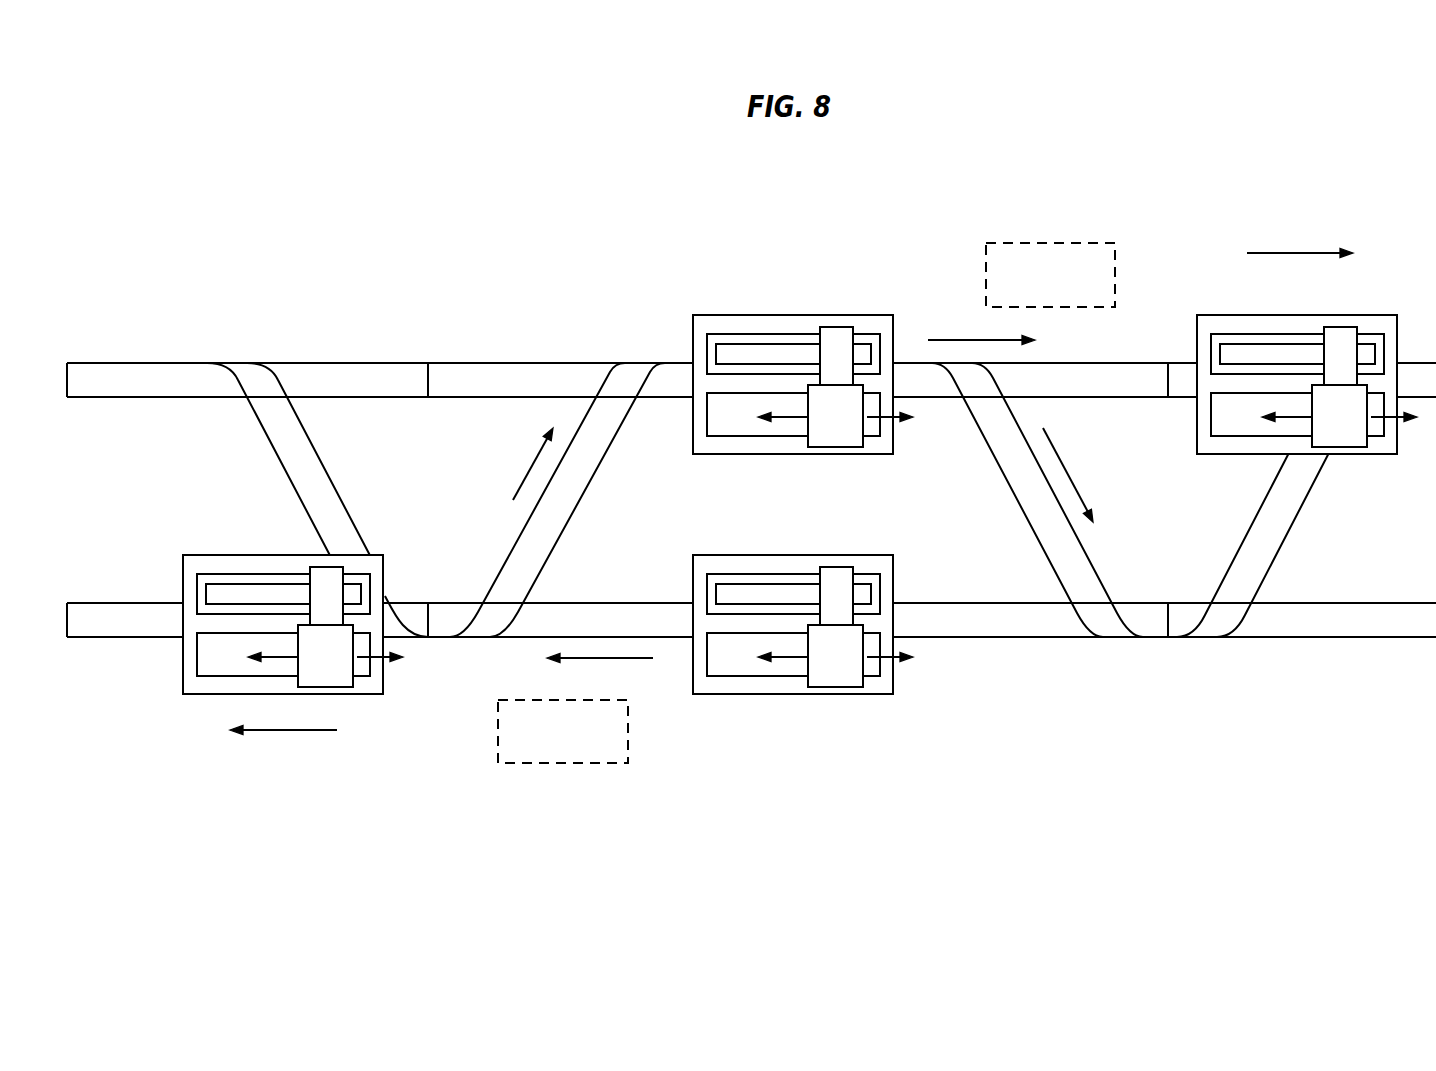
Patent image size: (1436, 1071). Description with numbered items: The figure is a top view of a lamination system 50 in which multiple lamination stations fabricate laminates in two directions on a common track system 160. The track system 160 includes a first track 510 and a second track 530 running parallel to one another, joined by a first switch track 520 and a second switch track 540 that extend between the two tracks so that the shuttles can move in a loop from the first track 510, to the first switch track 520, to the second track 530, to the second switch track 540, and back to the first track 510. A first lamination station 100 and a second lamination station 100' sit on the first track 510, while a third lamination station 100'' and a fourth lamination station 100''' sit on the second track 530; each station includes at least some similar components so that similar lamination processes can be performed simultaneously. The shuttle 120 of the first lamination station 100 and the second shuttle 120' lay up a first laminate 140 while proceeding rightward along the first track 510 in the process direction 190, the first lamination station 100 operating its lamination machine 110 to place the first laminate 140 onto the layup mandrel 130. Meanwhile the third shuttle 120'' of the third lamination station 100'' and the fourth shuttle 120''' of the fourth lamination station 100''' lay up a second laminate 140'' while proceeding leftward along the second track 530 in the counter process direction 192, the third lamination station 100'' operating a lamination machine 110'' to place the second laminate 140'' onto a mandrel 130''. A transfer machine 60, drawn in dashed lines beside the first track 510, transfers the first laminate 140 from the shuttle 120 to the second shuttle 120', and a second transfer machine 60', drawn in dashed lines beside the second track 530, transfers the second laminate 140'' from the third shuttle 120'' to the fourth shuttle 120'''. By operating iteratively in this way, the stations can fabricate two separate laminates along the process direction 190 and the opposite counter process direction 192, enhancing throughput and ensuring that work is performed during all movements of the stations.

The lamination system 50 is at (1180, 138).
The transfer machine 60 is at (1050, 258).
The second transfer machine 60' is at (563, 755).
The first lamination station 100 is at (1007, 364).
The second lamination station 100' is at (1278, 347).
The third lamination station 100'' is at (860, 628).
The fourth lamination station 100''' is at (512, 636).
The lamination machine 110 is at (802, 434).
The lamination machine 110'' is at (807, 676).
The shuttle 120 is at (793, 362).
The second shuttle 120' is at (1297, 362).
The third shuttle 120'' is at (793, 602).
The fourth shuttle 120''' is at (283, 602).
The layup mandrel 130 is at (760, 349).
The mandrel 130'' is at (512, 568).
The first laminate 140 is at (1045, 336).
The second laminate 140'' is at (538, 569).
The track system 160 is at (115, 288).
The process direction 190 is at (970, 340).
The counter process direction 192 is at (617, 658).
The first track 510 is at (158, 363).
The first switch track 520 is at (1022, 508).
The second track 530 is at (104, 603).
The second switch track 540 is at (512, 547).